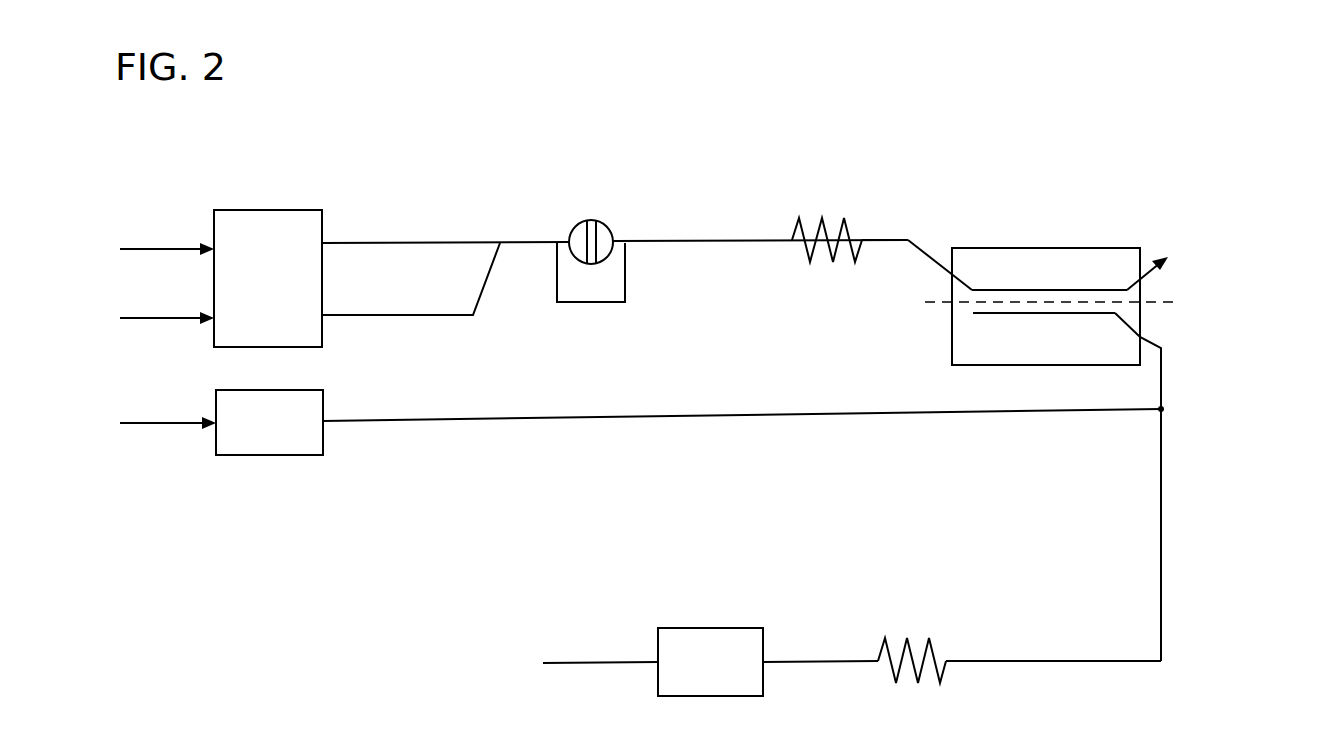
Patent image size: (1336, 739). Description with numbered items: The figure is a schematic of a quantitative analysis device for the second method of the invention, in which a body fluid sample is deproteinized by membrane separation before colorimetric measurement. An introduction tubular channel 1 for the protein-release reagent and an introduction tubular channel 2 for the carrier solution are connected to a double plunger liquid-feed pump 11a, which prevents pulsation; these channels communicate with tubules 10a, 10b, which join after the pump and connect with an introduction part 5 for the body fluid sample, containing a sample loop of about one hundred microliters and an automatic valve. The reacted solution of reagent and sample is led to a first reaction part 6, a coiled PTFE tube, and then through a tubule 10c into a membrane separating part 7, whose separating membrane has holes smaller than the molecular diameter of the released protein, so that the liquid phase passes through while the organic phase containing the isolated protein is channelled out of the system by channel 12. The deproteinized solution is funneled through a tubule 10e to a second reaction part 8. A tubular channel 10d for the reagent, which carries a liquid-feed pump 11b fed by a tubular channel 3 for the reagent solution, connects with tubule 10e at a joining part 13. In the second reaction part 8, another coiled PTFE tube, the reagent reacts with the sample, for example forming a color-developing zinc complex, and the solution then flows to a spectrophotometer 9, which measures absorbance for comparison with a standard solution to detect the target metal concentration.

The introduction tubular channel 1 is at (157, 250).
The introduction tubular channel 2 is at (157, 321).
The tubular channel 3 is at (158, 425).
The introduction part 5 is at (598, 237).
The first reaction part 6 is at (823, 218).
The membrane separating part 7 is at (1038, 263).
The second reaction part 8 is at (907, 645).
The spectrophotometer 9 is at (723, 628).
The tubule 10a is at (418, 243).
The tubule 10b is at (478, 300).
The tubule 10c is at (737, 241).
The tubular channel 10d is at (872, 414).
The tubule 10e is at (1161, 380).
The liquid-feed pump 11a is at (287, 236).
The liquid-feed pump 11b is at (253, 427).
The channel 12 is at (1150, 275).
The joining part 13 is at (1168, 424).